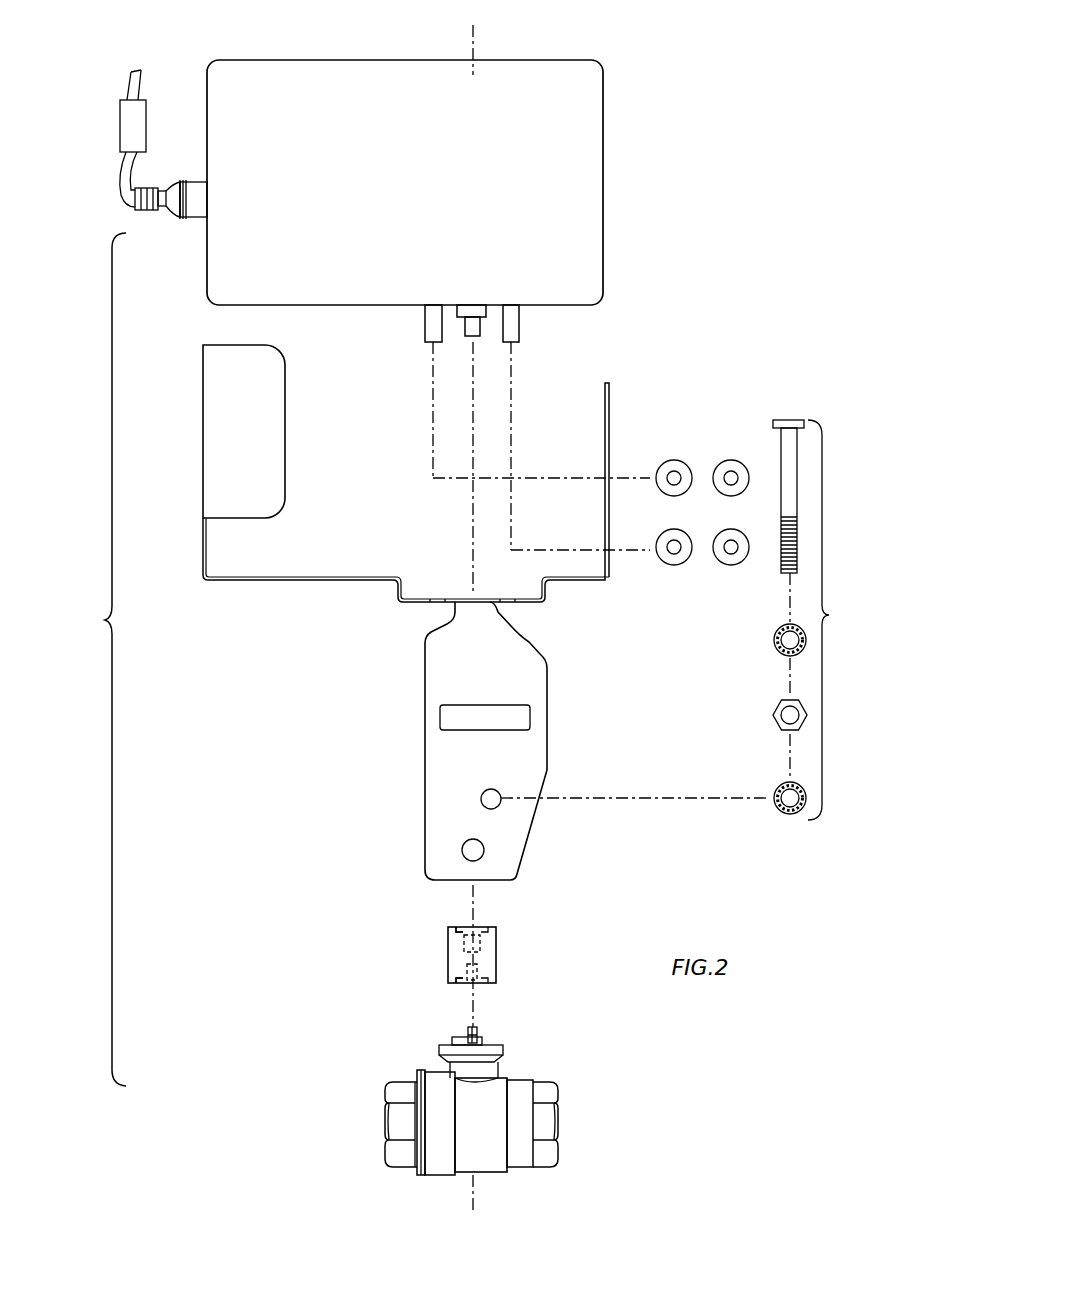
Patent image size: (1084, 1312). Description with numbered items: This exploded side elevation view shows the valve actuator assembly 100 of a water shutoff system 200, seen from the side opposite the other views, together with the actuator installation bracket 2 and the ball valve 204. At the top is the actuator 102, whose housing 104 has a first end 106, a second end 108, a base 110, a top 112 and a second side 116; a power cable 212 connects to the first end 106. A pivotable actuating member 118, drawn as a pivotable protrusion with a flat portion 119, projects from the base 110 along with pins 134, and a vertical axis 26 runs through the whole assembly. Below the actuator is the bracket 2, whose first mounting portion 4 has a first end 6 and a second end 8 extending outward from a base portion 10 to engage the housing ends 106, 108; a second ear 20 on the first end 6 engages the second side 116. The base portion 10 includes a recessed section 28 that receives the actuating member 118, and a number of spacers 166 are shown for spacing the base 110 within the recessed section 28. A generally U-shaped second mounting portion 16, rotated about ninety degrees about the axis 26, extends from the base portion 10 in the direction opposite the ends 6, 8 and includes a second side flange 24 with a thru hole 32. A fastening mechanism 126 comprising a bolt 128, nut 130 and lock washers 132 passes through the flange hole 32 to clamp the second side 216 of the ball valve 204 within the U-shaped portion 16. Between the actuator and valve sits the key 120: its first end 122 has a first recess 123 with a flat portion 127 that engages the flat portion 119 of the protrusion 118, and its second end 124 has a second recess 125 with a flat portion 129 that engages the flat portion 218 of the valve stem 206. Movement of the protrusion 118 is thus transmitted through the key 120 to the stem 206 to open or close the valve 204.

The actuator installation bracket 2 is at (258, 612).
The first mounting portion 4 is at (600, 365).
The first end 6 is at (204, 382).
The second end 8 is at (609, 420).
The base portion 10 is at (320, 581).
The second mounting portion 16 is at (385, 756).
The second ear 20 is at (231, 445).
The second side flange 24 is at (507, 770).
The vertical axis 26 is at (475, 48).
The recessed section 28 is at (398, 592).
The thru hole 32 is at (484, 804).
The valve actuator assembly 100 is at (65, 628).
The actuator 102 is at (620, 100).
The housing 104 is at (600, 141).
The first end 106 is at (207, 233).
The second end 108 is at (603, 212).
The base 110 is at (372, 307).
The top 112 is at (345, 60).
The second side 116 is at (253, 185).
The pivotable actuating member 118 is at (470, 308).
The flat portion 119 is at (467, 332).
The key 120 is at (498, 942).
The first end 122 is at (460, 927).
The first recess 123 is at (500, 914).
The second end 124 is at (450, 982).
The second recess 125 is at (452, 1000).
The fastening mechanism 126 is at (834, 627).
The flat portion 127 is at (464, 943).
The bolt 128 is at (780, 438).
The flat portion 129 is at (478, 972).
The nut 130 is at (777, 708).
The lock washer 132 is at (774, 638).
The pins 134 is at (428, 325).
The washer 166 is at (729, 530).
The water shutoff system 200 is at (571, 980).
The ball valve 204 is at (518, 1098).
The stem 206 is at (478, 1030).
The power cable 212 is at (135, 167).
The second side 216 is at (488, 1152).
The flat portion 218 is at (446, 1049).